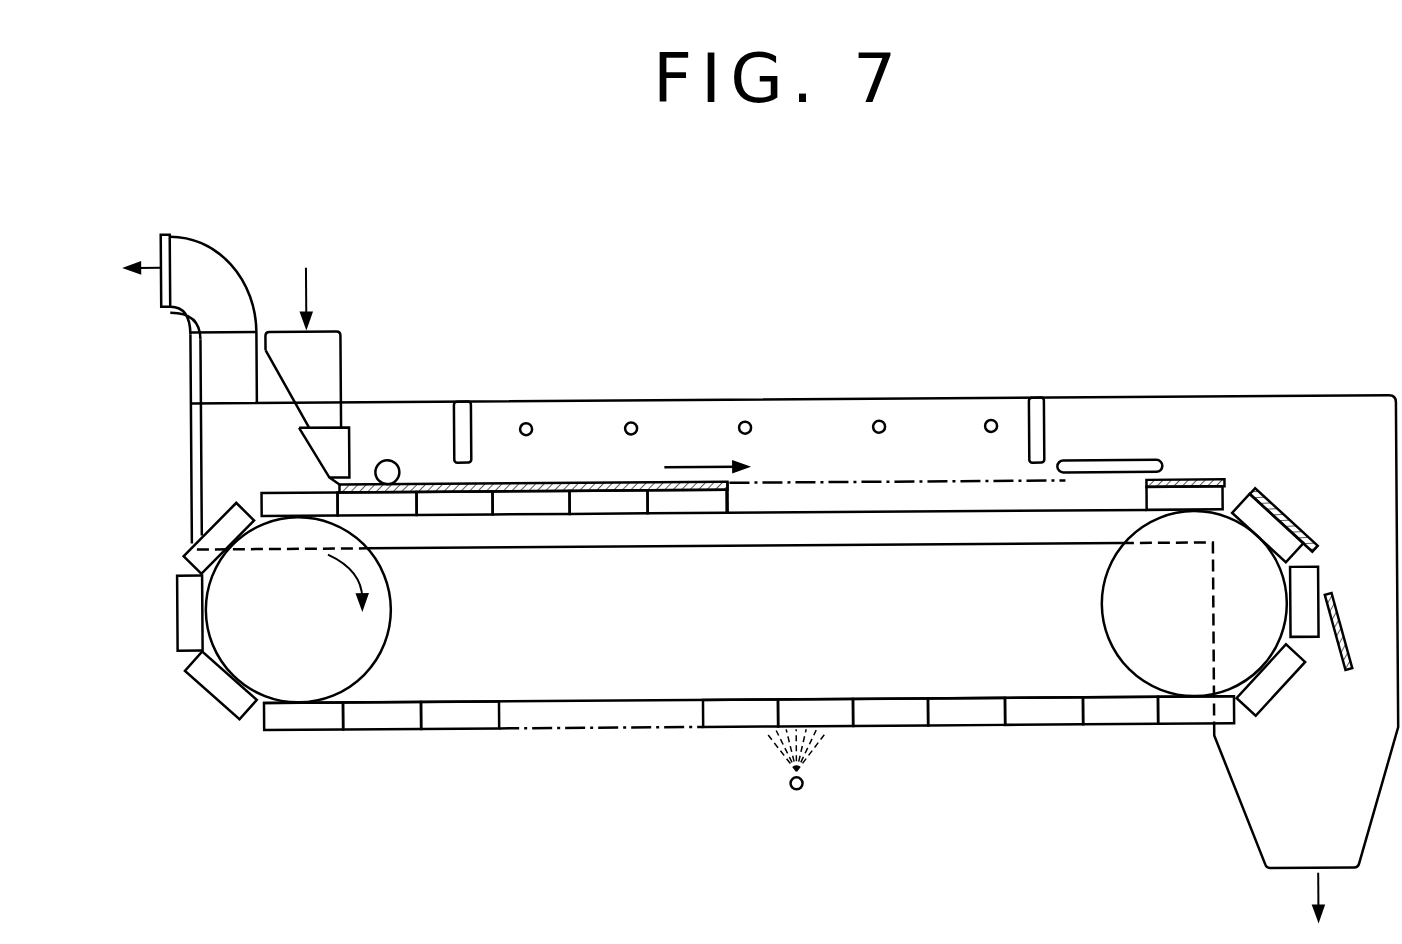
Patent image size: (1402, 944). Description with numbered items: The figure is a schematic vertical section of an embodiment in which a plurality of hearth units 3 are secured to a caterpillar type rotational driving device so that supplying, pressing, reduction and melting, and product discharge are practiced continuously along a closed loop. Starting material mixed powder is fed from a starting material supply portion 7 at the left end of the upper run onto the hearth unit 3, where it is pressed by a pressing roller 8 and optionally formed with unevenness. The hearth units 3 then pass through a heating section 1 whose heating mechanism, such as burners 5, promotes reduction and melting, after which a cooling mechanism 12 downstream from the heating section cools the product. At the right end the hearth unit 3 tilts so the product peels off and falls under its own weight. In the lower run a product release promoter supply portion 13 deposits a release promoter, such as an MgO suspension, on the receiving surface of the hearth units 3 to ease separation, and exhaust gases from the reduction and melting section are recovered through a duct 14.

The heating section 1 is at (704, 426).
The hearth unit 3 is at (607, 505).
The burner 5 is at (527, 418).
The starting material supply portion 7 is at (333, 351).
The pressing roller 8 is at (388, 456).
The cooling mechanism 12 is at (1078, 470).
The product release promoter supply portion 13 is at (787, 794).
The duct 14 is at (222, 274).